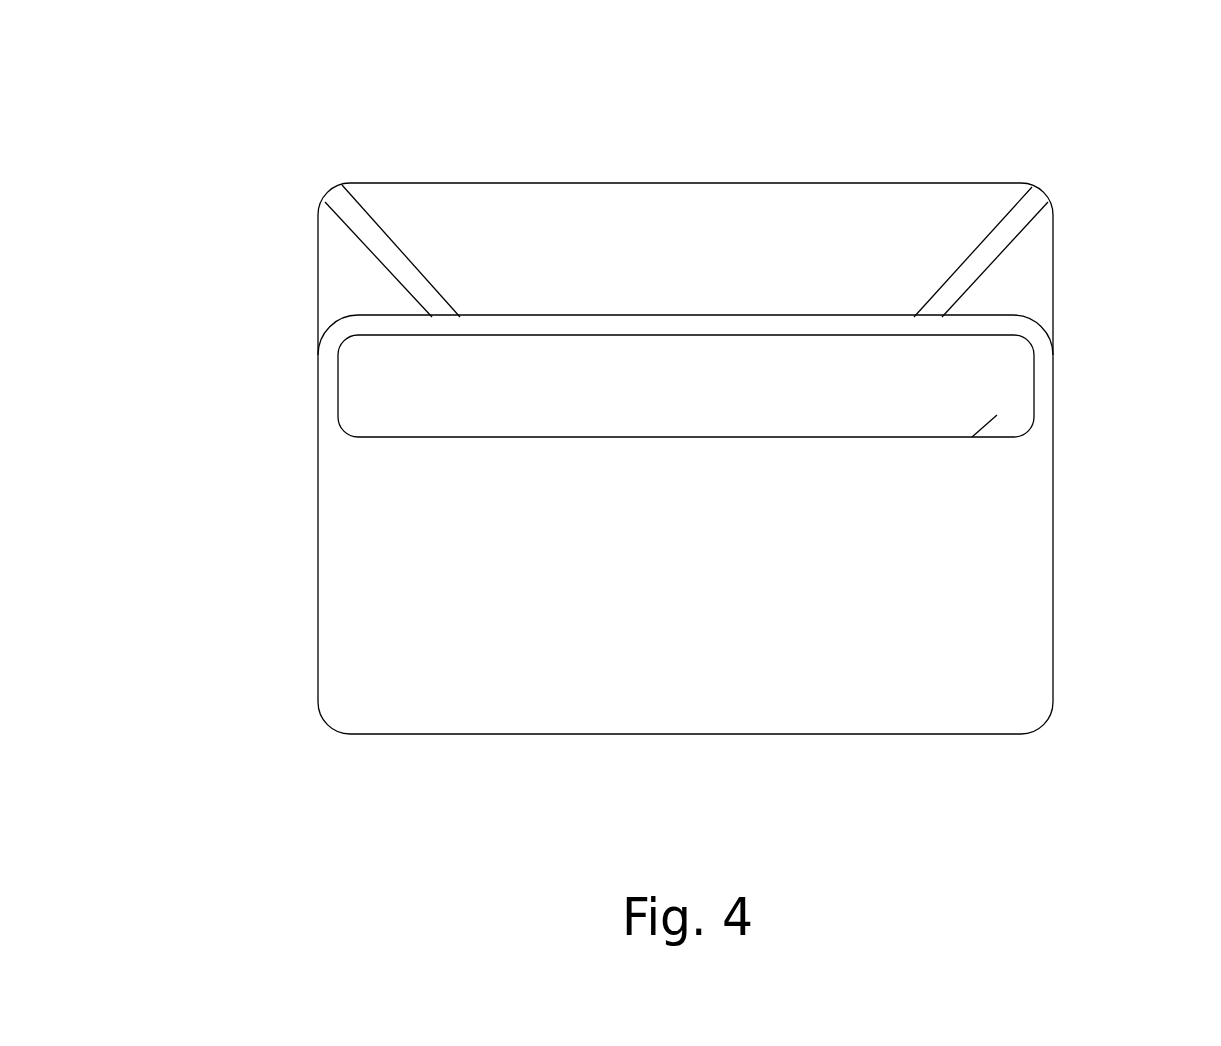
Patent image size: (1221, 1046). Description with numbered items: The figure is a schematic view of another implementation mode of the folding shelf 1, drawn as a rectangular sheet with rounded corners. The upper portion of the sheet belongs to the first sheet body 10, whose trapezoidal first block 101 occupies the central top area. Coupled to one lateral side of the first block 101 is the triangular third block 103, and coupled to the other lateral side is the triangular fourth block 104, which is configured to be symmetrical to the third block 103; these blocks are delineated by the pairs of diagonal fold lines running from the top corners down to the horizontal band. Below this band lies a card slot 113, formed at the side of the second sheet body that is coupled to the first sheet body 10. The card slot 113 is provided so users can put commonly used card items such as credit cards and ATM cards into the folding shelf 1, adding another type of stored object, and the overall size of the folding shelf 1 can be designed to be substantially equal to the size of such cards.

The folding shelf 1 is at (166, 84).
The first sheet body 10 is at (612, 182).
The first block 101 is at (792, 228).
The third block 103 is at (353, 290).
The fourth block 104 is at (1030, 288).
The card slot 113 is at (997, 415).